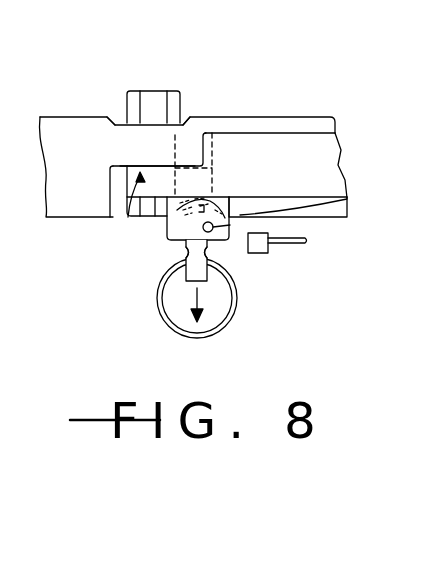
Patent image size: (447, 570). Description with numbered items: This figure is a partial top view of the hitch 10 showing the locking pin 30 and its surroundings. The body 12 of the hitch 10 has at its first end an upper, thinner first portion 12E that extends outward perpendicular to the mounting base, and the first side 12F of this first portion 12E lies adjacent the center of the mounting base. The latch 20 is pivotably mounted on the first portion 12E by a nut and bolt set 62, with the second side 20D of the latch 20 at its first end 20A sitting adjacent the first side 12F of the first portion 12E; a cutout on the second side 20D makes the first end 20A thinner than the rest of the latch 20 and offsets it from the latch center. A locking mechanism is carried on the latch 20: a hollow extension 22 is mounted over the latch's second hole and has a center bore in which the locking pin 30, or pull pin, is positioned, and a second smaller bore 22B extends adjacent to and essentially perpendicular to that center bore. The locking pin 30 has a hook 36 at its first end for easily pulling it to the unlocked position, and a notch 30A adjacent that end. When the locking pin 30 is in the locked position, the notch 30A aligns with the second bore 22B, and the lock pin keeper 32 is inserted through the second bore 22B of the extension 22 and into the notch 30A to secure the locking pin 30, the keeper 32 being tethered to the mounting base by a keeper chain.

The hitch 10 is at (233, 88).
The body 12 is at (282, 127).
The first portion 12E is at (130, 145).
The first side 12F is at (118, 220).
The latch 20 is at (302, 160).
The first end 20A is at (158, 184).
The second side 20D is at (145, 162).
The hollow extension 22 is at (348, 200).
The second smaller bore 22B is at (230, 217).
The locking pin 30 is at (165, 272).
The notch 30A is at (230, 262).
The lock pin keeper 32 is at (258, 254).
The hook 36 is at (217, 327).
The nut and bolt set 62 is at (153, 100).